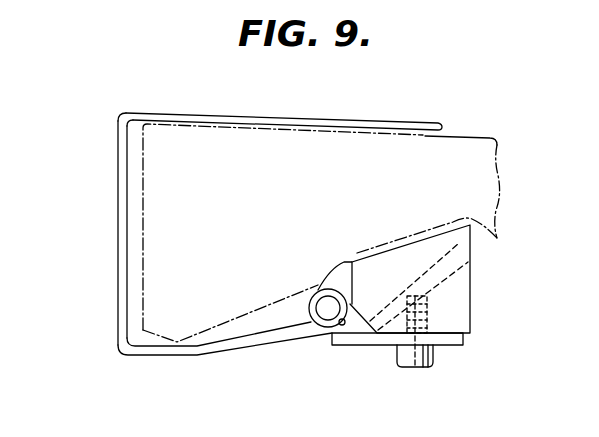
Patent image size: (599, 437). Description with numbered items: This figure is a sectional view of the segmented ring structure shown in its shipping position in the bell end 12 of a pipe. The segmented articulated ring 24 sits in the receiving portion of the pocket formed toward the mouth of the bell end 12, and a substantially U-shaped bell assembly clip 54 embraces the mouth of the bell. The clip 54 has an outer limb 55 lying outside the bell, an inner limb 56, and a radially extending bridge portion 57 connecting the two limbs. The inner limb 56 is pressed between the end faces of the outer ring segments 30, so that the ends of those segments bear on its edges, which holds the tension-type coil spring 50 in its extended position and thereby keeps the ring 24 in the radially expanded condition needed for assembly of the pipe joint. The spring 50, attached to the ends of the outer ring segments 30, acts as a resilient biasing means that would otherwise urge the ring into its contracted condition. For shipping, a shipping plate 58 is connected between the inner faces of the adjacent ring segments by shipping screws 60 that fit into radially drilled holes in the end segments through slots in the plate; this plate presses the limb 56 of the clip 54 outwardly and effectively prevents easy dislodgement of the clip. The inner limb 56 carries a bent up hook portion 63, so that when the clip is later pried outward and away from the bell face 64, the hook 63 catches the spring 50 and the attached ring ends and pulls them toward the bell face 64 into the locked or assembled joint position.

The bell end 12 is at (330, 180).
The segmented articulated ring 24 is at (447, 313).
The outer ring segments 30 is at (462, 283).
The tension-type coil spring 50 is at (326, 333).
The bell assembly clip 54 is at (241, 237).
The outer limb 55 is at (222, 114).
The inner limb 56 is at (243, 348).
The bridge portion 57 is at (117, 282).
The shipping plate 58 is at (452, 345).
The shipping screws 60 is at (425, 366).
The hook portion 63 is at (472, 258).
The bell face 64 is at (143, 183).